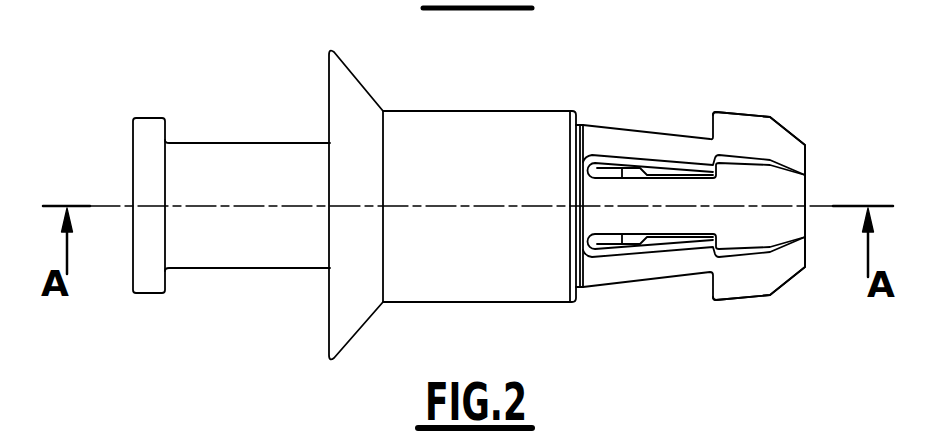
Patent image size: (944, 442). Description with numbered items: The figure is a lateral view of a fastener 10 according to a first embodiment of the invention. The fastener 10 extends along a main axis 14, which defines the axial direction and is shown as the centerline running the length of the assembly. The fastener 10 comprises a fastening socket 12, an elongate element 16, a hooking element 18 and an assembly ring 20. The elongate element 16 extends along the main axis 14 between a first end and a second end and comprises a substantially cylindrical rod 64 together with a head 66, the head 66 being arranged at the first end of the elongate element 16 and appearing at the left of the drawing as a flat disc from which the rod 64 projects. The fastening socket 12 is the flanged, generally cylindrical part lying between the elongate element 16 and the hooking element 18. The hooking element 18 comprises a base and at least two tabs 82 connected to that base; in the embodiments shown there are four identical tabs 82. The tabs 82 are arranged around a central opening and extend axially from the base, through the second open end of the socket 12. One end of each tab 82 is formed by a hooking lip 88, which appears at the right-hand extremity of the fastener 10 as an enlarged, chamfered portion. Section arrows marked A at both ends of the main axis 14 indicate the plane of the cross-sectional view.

The fastener 10 is at (493, 191).
The fastening socket 12 is at (510, 98).
The main axis 14 is at (837, 208).
The elongate element 16 is at (231, 165).
The hooking element 18 is at (694, 190).
The assembly ring 20 is at (626, 433).
The rod 64 is at (237, 246).
The head 66 is at (144, 132).
The tabs 82 is at (660, 262).
The hooking lip 88 is at (743, 298).